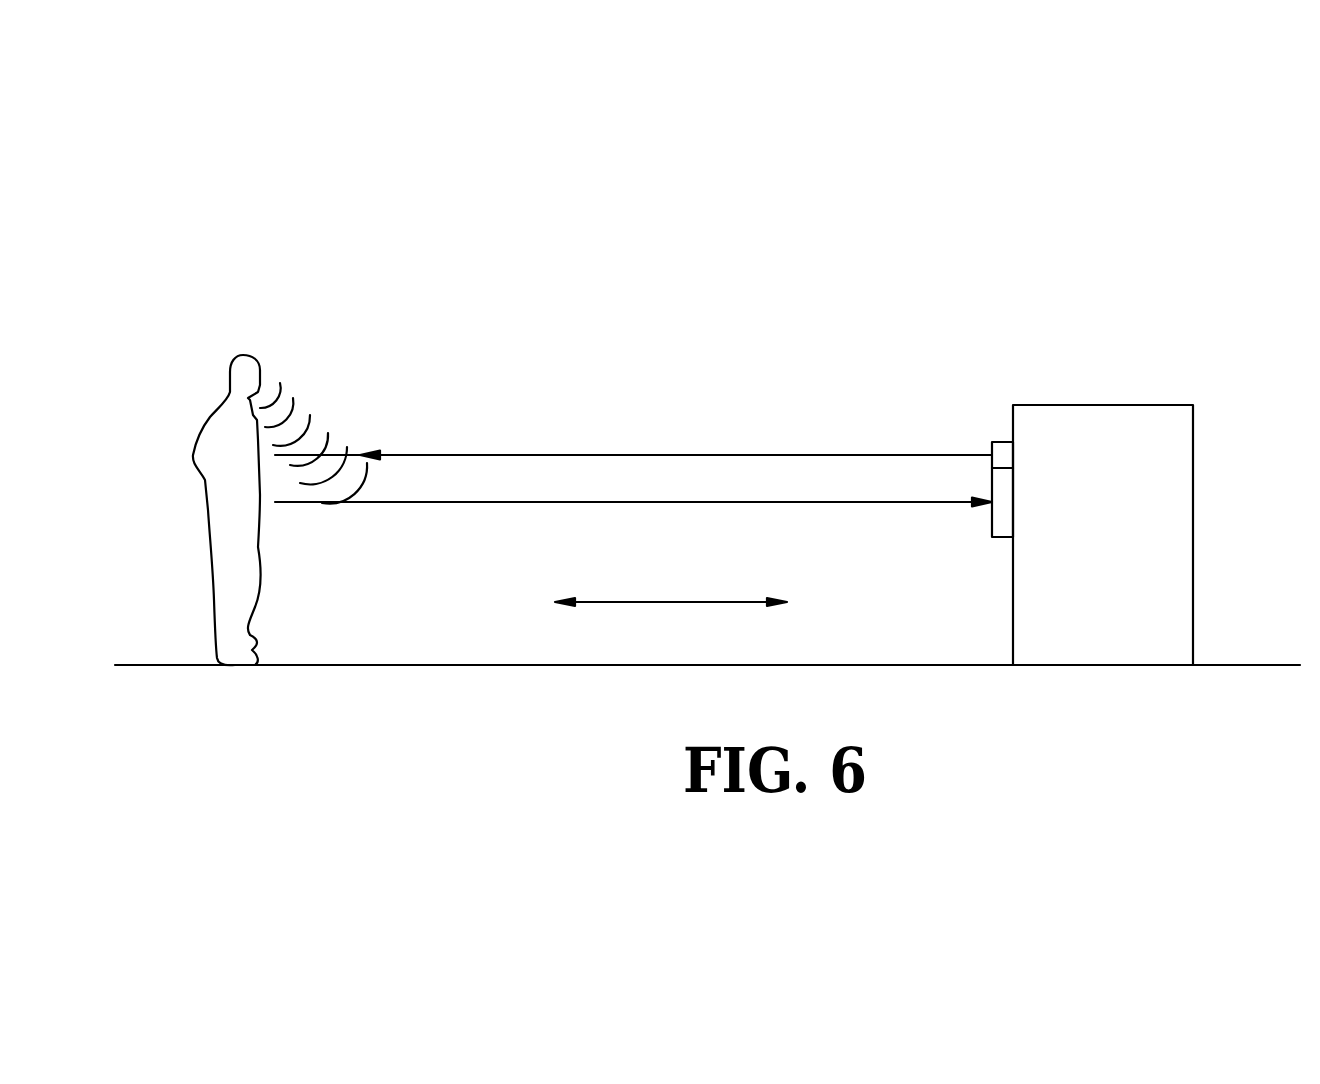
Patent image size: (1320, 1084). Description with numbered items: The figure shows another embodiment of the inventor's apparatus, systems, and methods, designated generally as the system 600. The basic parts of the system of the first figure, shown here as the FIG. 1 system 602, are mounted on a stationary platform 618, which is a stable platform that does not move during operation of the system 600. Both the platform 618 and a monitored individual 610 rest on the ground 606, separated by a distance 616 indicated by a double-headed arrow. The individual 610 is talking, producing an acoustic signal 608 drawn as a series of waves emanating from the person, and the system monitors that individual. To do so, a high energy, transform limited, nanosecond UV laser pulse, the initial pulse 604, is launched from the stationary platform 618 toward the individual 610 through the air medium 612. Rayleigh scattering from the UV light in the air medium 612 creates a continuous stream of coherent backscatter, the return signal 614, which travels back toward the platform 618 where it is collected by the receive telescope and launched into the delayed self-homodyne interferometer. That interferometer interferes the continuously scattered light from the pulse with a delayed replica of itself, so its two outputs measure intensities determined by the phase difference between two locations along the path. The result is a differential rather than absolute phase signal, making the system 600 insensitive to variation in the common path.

The system 600 is at (965, 258).
The FIG. 1 system 602 is at (1090, 405).
The initial pulse 604 is at (742, 455).
The ground 606 is at (900, 665).
The acoustic signal 608 is at (307, 427).
The individual 610 is at (230, 415).
The air medium 612 is at (673, 323).
The return signal 614 is at (895, 503).
The distance 616 is at (653, 600).
The platform 618 is at (992, 447).